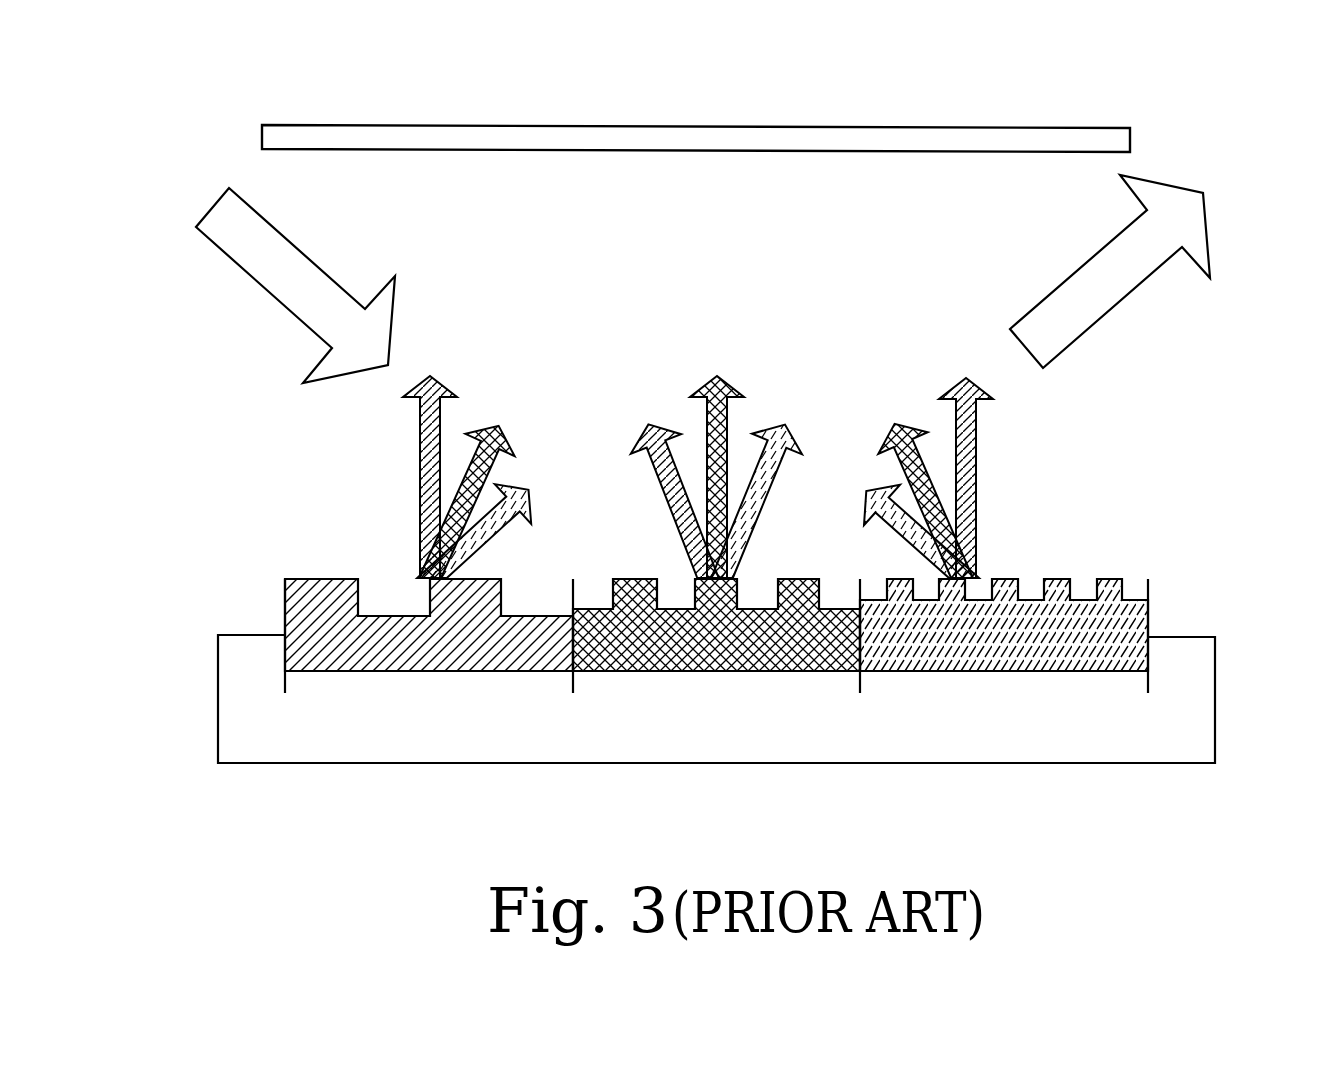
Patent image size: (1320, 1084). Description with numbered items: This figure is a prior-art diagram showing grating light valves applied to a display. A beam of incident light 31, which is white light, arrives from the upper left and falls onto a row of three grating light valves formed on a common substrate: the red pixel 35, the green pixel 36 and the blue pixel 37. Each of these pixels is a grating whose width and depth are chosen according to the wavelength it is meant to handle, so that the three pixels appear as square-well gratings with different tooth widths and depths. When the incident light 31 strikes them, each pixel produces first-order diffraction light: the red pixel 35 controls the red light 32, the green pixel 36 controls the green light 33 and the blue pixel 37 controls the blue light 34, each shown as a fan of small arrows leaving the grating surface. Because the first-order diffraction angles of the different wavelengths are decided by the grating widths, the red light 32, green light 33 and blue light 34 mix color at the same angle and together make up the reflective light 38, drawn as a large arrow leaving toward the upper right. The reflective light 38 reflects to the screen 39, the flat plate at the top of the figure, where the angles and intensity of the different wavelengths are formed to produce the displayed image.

The incident light 31 is at (330, 297).
The red light 32 is at (432, 377).
The green light 33 is at (497, 423).
The blue light 34 is at (527, 492).
The red pixel 35 is at (429, 656).
The green pixel 36 is at (716, 656).
The blue pixel 37 is at (1004, 656).
The reflective light 38 is at (1100, 288).
The screen 39 is at (696, 110).